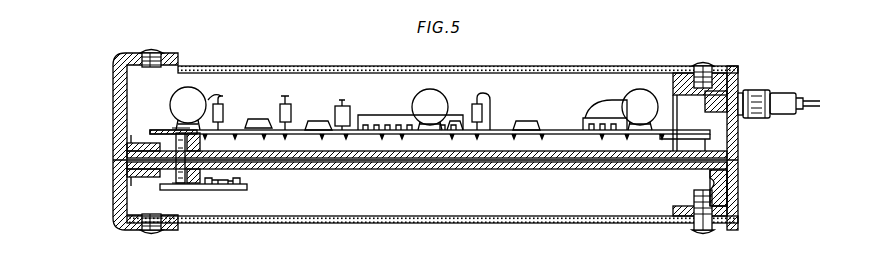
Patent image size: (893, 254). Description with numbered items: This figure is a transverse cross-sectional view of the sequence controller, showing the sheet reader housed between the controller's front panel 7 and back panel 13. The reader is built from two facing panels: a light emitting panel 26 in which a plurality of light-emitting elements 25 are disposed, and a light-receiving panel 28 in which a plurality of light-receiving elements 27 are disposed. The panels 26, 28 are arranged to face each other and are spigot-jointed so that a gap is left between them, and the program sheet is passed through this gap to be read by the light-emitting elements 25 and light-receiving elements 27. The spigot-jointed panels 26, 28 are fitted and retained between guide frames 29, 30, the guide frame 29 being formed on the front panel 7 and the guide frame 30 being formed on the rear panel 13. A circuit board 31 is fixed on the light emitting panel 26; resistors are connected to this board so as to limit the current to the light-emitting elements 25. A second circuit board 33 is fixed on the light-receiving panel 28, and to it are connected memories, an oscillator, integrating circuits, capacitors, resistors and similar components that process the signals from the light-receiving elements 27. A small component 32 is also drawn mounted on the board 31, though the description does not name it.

The front panel 7 is at (133, 53).
The back panel 13 is at (738, 84).
The light-emitting elements 25 is at (170, 184).
The light emitting panel 26 is at (554, 170).
The light-receiving elements 27 is at (177, 128).
The light-receiving panel 28 is at (552, 151).
The guide frame 29 is at (137, 143).
The guide frame 30 is at (738, 183).
The circuit board 31 is at (210, 191).
The circuit component 32 is at (247, 181).
The circuit board 33 is at (240, 128).